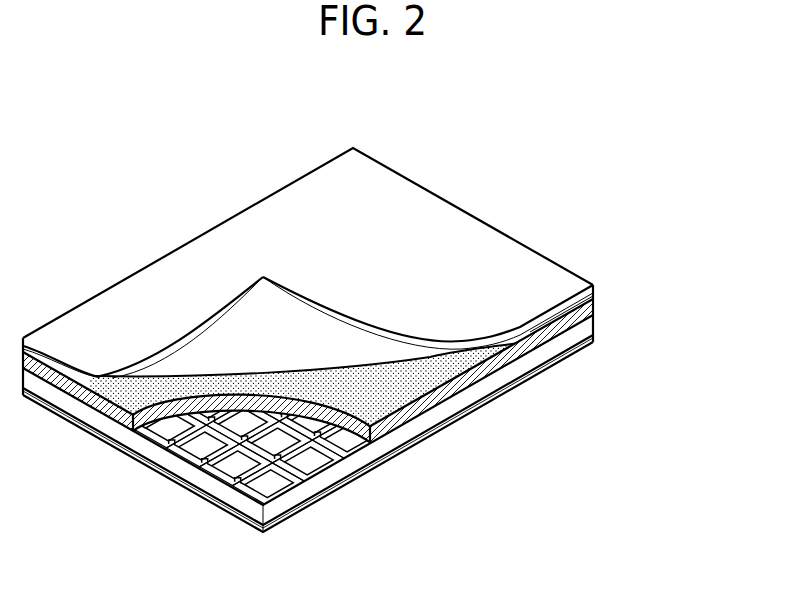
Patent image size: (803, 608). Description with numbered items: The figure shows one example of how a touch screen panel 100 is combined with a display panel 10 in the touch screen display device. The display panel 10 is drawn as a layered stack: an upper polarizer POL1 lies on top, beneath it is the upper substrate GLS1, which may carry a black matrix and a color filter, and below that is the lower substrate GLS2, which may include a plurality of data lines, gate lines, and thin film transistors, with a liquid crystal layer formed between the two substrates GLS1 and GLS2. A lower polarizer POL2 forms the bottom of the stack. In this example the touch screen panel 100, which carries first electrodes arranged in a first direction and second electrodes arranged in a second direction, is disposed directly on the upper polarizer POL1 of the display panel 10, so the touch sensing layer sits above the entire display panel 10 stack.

The touch screen panel 100 is at (385, 340).
The display panel 10 is at (385, 340).
The upper polarizer POL1 is at (594, 292).
The upper substrate GLS1 is at (594, 303).
The lower substrate GLS2 is at (594, 322).
The lower polarizer POL2 is at (594, 340).